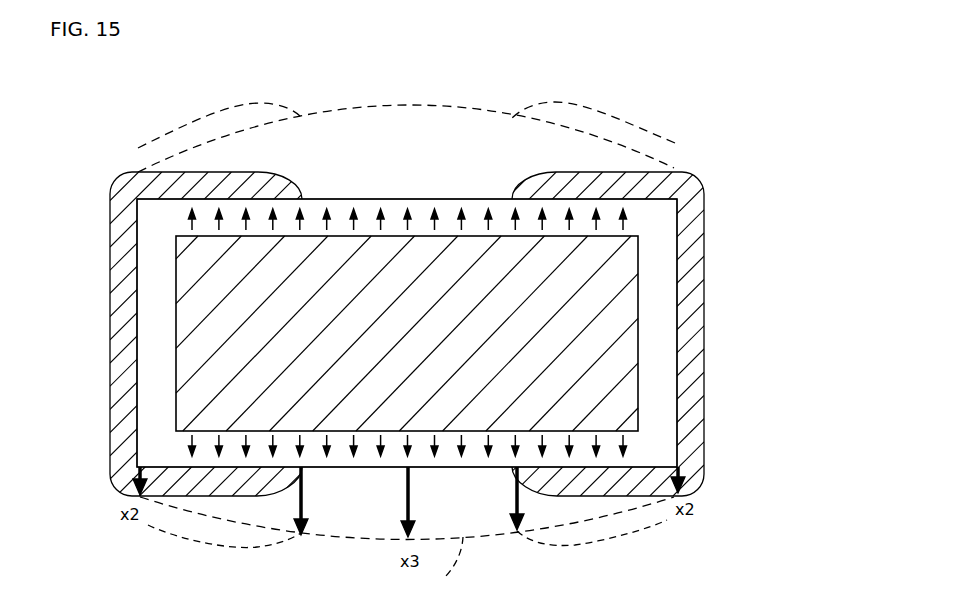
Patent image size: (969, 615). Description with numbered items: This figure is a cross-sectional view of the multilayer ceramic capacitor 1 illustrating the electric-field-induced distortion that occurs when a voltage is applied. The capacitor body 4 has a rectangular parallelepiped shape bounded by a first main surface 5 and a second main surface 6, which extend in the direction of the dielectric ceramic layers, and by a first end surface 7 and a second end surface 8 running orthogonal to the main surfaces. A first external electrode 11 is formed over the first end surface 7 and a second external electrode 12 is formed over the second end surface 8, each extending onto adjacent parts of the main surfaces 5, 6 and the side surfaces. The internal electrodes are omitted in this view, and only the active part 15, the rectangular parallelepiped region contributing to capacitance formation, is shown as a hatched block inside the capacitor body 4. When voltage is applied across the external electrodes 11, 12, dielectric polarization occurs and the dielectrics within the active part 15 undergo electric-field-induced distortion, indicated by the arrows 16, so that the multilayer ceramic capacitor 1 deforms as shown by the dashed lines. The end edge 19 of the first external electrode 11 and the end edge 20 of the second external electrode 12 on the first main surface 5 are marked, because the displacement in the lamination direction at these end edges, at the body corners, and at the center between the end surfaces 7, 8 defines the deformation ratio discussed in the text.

The multilayer ceramic capacitor 1 is at (66, 129).
The capacitor body 4 is at (461, 190).
The first main surface 5 is at (430, 468).
The second main surface 6 is at (375, 199).
The first end surface 7 is at (137, 330).
The second end surface 8 is at (680, 352).
The first external electrode 11 is at (117, 265).
The second external electrode 12 is at (695, 262).
The active part 15 is at (648, 306).
The arrows 16 is at (626, 225).
The end edge of the first external electrode 19 is at (303, 470).
The end edge of the second external electrode 20 is at (513, 470).